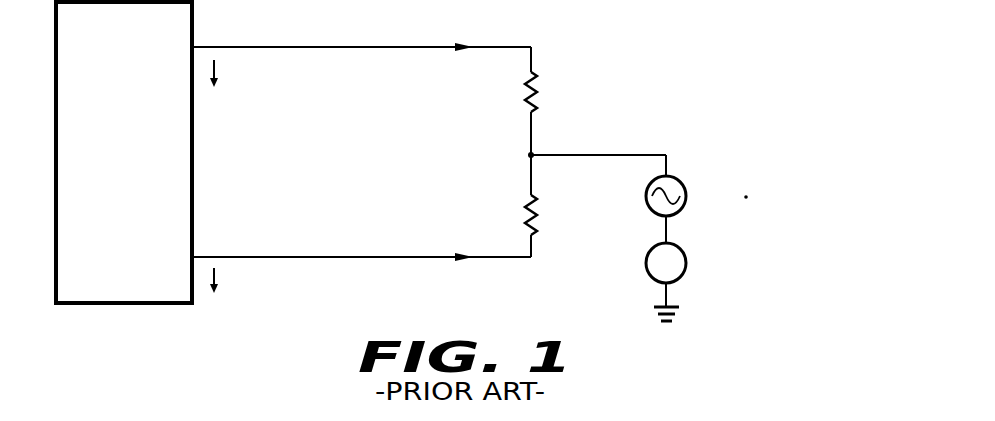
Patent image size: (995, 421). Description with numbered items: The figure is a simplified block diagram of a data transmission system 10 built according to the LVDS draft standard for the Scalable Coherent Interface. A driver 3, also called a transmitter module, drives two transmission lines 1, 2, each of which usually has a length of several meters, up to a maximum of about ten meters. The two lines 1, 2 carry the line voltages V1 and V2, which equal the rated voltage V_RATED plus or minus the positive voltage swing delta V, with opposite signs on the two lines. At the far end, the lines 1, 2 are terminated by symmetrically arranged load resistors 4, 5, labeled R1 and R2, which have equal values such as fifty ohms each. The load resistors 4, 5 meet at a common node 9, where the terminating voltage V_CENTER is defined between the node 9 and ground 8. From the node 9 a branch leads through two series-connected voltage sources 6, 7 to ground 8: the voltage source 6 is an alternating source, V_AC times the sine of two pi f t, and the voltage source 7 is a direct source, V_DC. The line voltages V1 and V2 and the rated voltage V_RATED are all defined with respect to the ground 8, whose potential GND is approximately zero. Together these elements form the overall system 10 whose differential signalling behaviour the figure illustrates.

The line 1 is at (431, 47).
The line 2 is at (431, 257).
The driver 3 is at (121, 303).
The load resistor 4 is at (525, 98).
The load resistor 5 is at (527, 221).
The voltage source 6 is at (646, 203).
The voltage source 7 is at (647, 266).
The ground 8 is at (658, 316).
The node 9 is at (536, 152).
The data transmission system 10 is at (301, 366).